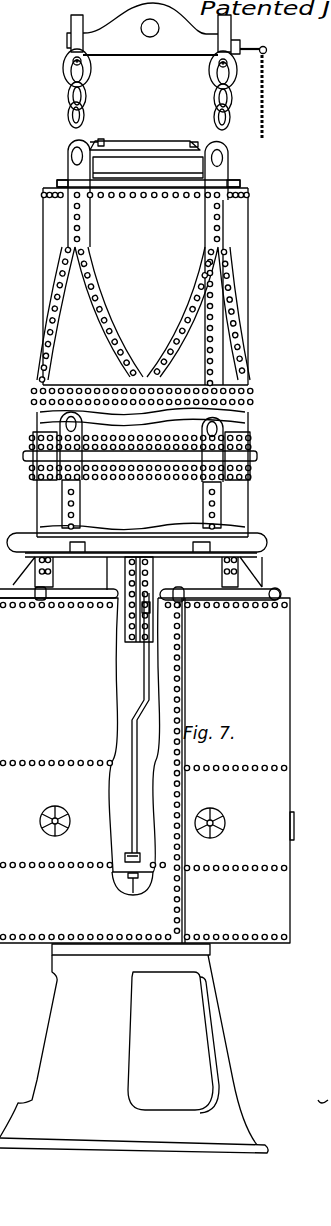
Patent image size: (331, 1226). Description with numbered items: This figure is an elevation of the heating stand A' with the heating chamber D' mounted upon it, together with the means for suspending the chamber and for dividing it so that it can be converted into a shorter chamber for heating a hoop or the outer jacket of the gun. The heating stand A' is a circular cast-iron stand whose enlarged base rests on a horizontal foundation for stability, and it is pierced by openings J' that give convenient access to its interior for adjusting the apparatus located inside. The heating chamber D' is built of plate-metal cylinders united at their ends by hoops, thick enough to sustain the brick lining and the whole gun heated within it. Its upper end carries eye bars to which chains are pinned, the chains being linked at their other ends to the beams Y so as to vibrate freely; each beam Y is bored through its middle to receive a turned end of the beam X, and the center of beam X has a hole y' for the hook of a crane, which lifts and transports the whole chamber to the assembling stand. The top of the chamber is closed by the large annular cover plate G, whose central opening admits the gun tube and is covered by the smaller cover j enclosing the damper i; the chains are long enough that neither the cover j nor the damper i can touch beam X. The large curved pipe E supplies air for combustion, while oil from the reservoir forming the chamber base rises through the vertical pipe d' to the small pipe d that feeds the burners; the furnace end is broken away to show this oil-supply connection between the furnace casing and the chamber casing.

The beams Y is at (167, 77).
The hole y' is at (150, 20).
The beam X is at (150, 47).
The damper i is at (96, 137).
The cover j is at (148, 157).
The annular cover plate G is at (233, 183).
The heating chamber D' is at (147, 565).
The curved pipe E is at (137, 545).
The pipe d is at (150, 591).
The vertical pipe d' is at (133, 726).
The heating stand A' is at (134, 1048).
The openings J' is at (173, 1042).